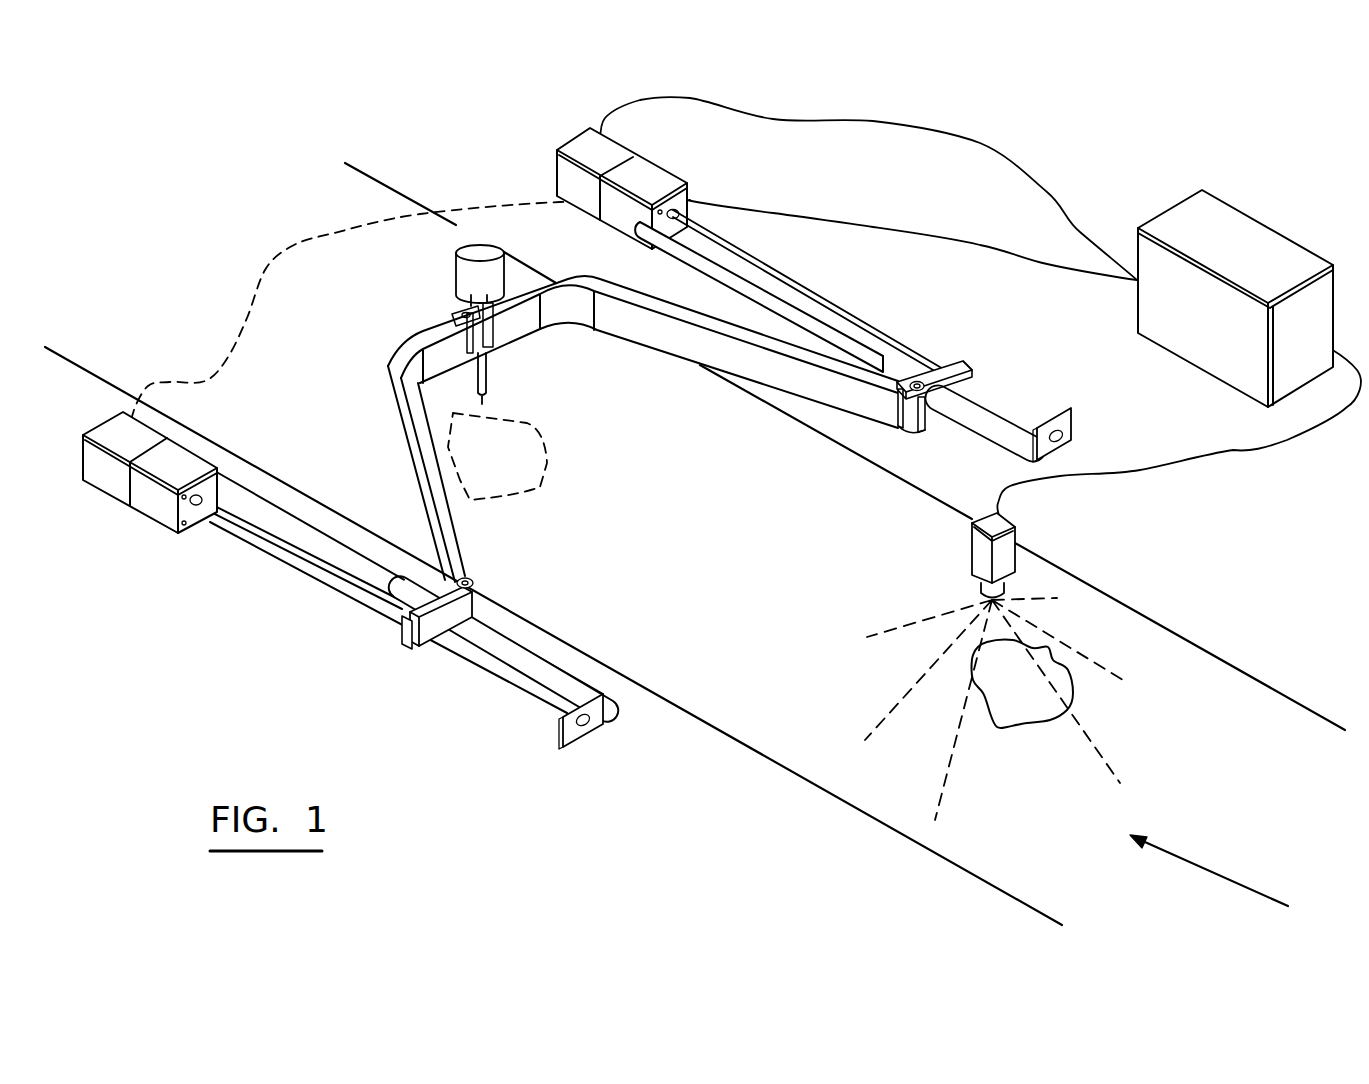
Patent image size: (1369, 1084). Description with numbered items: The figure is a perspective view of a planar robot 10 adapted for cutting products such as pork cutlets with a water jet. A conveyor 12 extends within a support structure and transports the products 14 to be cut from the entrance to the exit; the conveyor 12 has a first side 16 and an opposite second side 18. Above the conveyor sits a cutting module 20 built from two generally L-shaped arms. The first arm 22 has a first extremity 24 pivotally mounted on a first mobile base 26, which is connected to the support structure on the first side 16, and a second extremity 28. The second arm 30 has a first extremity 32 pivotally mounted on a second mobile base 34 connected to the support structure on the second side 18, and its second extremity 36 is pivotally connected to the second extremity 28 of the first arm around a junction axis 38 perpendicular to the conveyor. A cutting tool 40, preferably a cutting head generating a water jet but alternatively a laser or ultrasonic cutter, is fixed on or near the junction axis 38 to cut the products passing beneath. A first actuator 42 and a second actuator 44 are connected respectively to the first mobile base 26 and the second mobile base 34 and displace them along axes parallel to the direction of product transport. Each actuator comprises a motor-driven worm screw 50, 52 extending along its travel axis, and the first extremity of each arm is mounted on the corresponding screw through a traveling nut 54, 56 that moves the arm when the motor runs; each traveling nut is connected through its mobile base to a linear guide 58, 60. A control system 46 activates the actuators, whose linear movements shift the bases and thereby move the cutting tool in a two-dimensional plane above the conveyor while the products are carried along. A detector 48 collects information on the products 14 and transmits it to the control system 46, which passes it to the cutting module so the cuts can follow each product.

The planar robot 10 is at (1044, 151).
The conveyor 12 is at (755, 693).
The products 14 is at (1007, 714).
The first side 16 is at (1103, 590).
The second side 18 is at (828, 792).
The cutting module 20 is at (986, 368).
The first generally L-shaped arm 22 is at (574, 280).
The first extremity 24 is at (918, 382).
The first mobile base 26 is at (958, 363).
The second extremity 28 is at (495, 305).
The second generally L-shaped arm 30 is at (388, 372).
The first extremity 32 is at (471, 576).
The second mobile base 34 is at (410, 637).
The second extremity 36 is at (455, 315).
The junction axis 38 is at (468, 305).
The cutting tool 40 is at (474, 255).
The first actuator 42 is at (585, 150).
The second actuator 44 is at (115, 482).
The control system 46 is at (1263, 222).
The detector 48 is at (1013, 535).
The worm screw 50 is at (835, 303).
The worm screw 52 is at (277, 545).
The traveling nut 54 is at (940, 366).
The traveling nut 56 is at (404, 625).
The linear guide 58 is at (752, 294).
The linear guide 60 is at (547, 673).